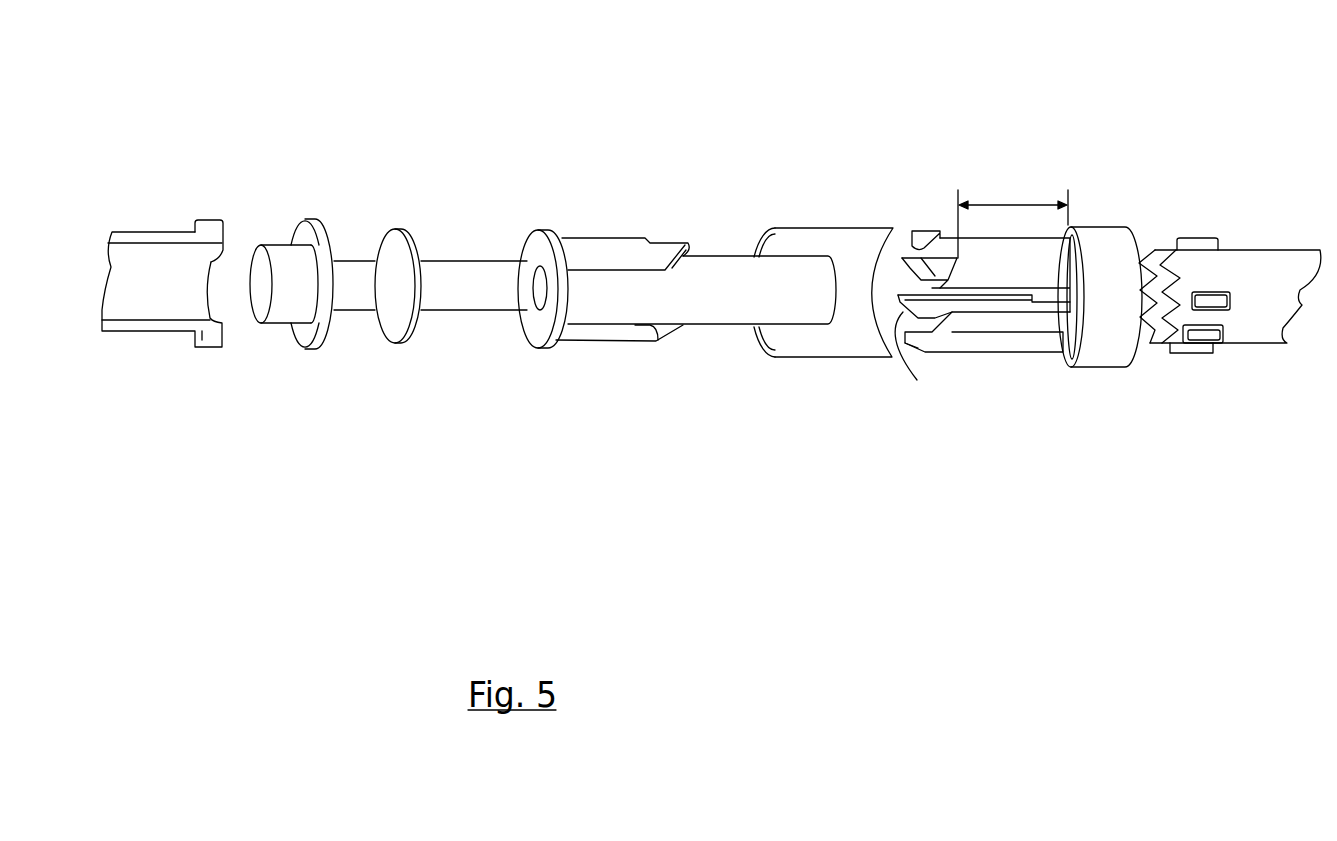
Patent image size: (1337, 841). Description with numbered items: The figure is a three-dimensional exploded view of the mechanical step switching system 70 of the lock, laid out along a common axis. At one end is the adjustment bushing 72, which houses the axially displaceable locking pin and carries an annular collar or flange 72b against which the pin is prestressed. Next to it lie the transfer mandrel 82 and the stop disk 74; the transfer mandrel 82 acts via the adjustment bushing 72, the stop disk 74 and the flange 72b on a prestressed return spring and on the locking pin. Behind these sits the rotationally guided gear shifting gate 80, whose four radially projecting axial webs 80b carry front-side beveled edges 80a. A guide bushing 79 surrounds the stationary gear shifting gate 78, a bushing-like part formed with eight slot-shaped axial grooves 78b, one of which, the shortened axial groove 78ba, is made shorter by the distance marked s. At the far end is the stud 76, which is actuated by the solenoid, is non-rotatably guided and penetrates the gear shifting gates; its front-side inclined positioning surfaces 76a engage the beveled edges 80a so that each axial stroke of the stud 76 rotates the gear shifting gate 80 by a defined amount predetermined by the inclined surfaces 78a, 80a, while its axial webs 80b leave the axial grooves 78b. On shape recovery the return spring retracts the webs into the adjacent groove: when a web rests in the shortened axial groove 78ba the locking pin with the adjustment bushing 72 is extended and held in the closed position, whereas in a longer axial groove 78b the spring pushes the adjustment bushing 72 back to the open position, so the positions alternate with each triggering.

The step switching system 70 is at (995, 158).
The adjustment bushing 72 is at (145, 333).
The flange of the adjustment bushing 72b is at (218, 218).
The stop disk 74 is at (413, 340).
The stud 76 is at (1252, 345).
The inclined positioning surfaces 76a is at (1157, 345).
The stationary gear shifting gate 78 is at (1098, 259).
The inclined surfaces of the stationary gear shifting gate 78a is at (900, 352).
The axial grooves 78b is at (985, 305).
The shortened axial groove 78ba is at (910, 231).
The guide bushing 79 is at (824, 358).
The rotationally guided gear shifting gate 80 is at (608, 344).
The beveled edges 80a is at (690, 243).
The axial webs 80b is at (658, 342).
The transfer mandrel 82 is at (455, 261).